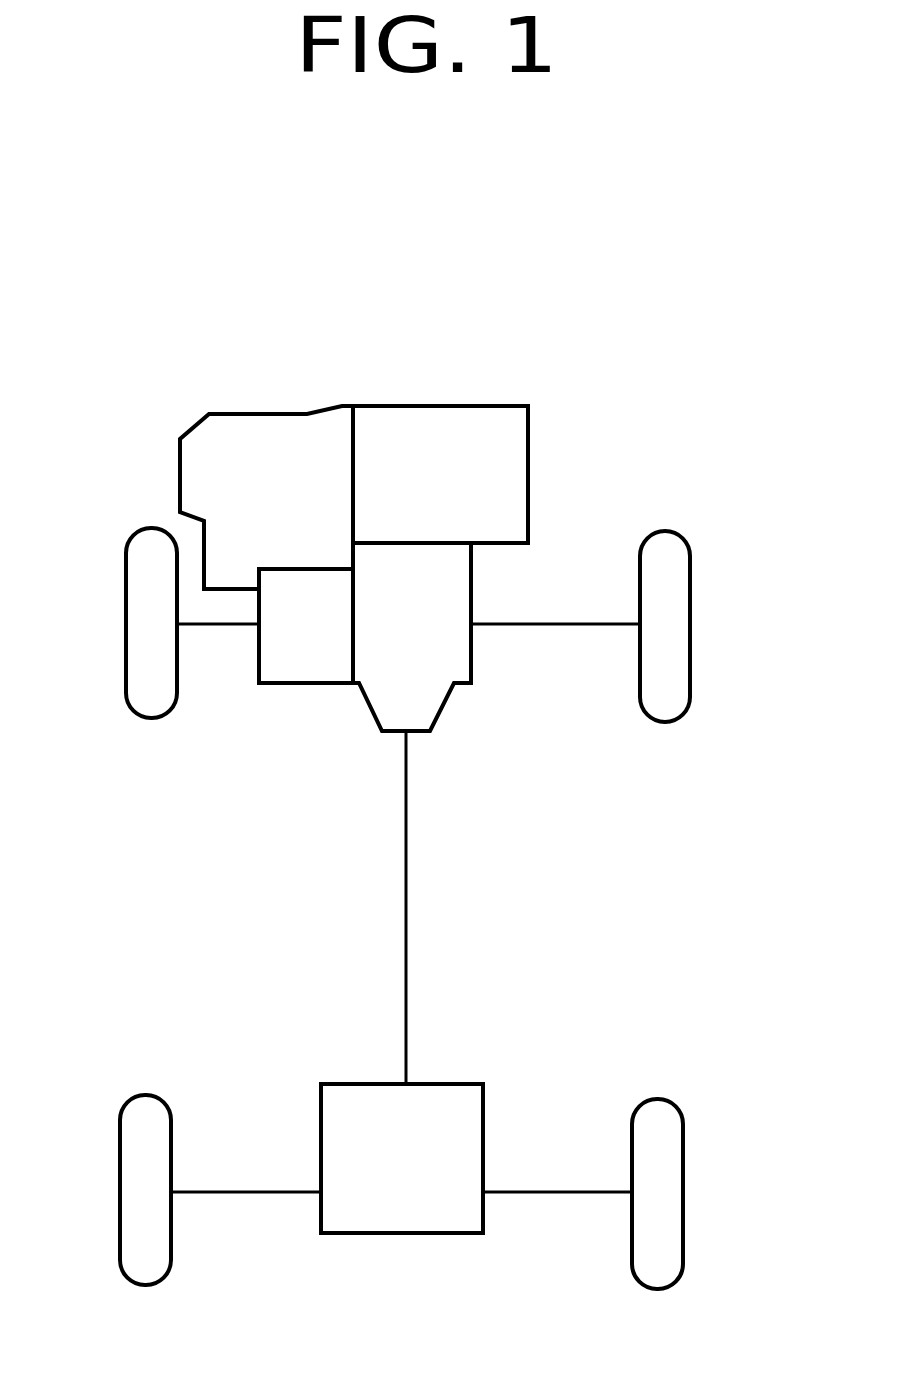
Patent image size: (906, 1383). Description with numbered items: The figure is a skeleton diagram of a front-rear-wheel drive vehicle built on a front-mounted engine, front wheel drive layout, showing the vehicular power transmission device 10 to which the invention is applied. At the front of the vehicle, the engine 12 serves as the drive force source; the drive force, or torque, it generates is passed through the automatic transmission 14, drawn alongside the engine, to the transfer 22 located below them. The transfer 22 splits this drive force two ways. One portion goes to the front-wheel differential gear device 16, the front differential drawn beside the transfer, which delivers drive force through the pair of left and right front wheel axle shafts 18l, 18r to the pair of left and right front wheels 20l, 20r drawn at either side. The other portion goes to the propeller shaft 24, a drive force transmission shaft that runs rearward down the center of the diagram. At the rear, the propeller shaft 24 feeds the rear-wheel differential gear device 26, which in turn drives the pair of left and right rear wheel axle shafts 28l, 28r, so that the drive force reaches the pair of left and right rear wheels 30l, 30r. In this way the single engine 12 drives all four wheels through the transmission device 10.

The vehicular power transmission device 10 is at (677, 369).
The engine 12 is at (518, 430).
The automatic transmission 14 is at (237, 423).
The front-wheel differential gear device 16 is at (328, 673).
The left front wheel axle shaft 18l is at (217, 624).
The right front wheel axle shaft 18r is at (540, 624).
The left front wheel 20l is at (134, 671).
The right front wheel 20r is at (675, 674).
The transfer 22 is at (428, 707).
The propeller shaft 24 is at (406, 938).
The rear-wheel differential gear device 26 is at (405, 1223).
The left rear wheel axle shaft 28l is at (232, 1192).
The right rear wheel axle shaft 28r is at (580, 1192).
The left rear wheel 30l is at (133, 1238).
The right rear wheel 30r is at (667, 1238).